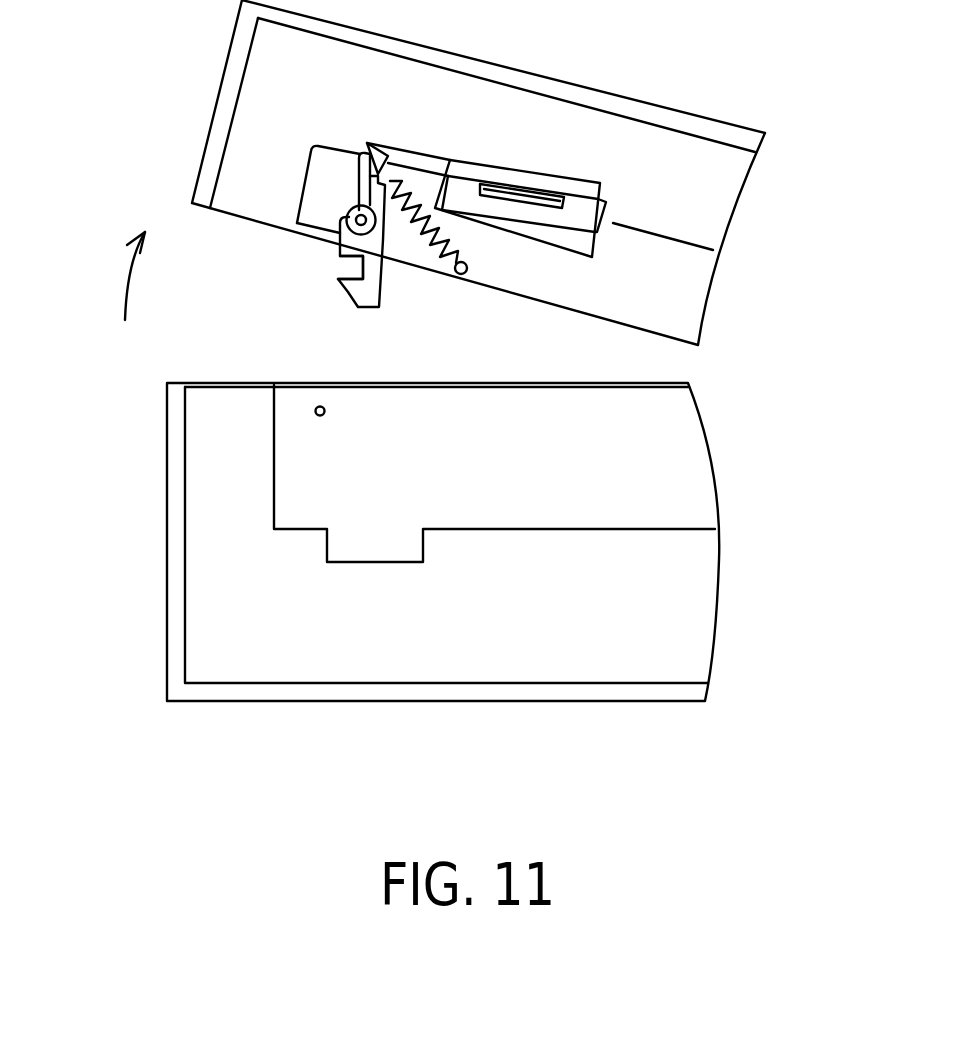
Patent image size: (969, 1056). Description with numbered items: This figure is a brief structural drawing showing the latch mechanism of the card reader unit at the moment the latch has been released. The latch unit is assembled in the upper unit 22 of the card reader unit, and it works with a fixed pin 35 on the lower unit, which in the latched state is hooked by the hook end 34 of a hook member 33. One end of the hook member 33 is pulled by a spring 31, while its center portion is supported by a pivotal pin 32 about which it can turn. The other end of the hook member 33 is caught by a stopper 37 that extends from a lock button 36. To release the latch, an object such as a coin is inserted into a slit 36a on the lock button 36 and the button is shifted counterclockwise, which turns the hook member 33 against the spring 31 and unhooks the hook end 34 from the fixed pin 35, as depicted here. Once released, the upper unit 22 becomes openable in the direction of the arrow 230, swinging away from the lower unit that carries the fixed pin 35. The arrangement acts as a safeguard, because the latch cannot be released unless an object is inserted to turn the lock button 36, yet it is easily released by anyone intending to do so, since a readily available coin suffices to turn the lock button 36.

The housing 22 is at (728, 265).
The spring 31 is at (425, 257).
The pivotal pin 32 is at (350, 210).
The hook member 33 is at (342, 257).
The hook end 34 is at (352, 295).
The fixed pin 35 is at (315, 417).
The lock button 36 is at (575, 213).
The slit 36a is at (540, 188).
The stopper 37 is at (366, 143).
The arrow 230 is at (93, 276).